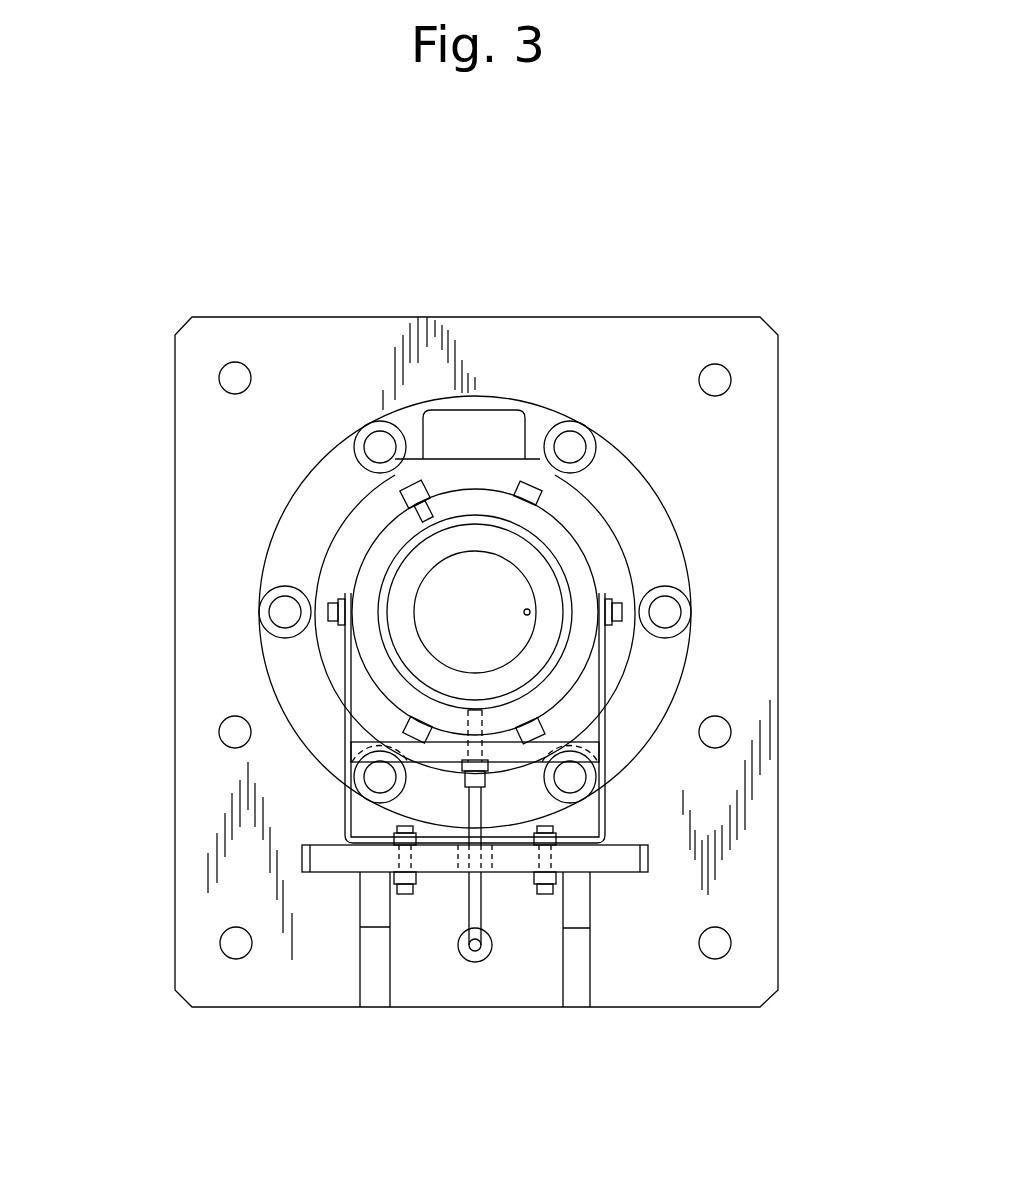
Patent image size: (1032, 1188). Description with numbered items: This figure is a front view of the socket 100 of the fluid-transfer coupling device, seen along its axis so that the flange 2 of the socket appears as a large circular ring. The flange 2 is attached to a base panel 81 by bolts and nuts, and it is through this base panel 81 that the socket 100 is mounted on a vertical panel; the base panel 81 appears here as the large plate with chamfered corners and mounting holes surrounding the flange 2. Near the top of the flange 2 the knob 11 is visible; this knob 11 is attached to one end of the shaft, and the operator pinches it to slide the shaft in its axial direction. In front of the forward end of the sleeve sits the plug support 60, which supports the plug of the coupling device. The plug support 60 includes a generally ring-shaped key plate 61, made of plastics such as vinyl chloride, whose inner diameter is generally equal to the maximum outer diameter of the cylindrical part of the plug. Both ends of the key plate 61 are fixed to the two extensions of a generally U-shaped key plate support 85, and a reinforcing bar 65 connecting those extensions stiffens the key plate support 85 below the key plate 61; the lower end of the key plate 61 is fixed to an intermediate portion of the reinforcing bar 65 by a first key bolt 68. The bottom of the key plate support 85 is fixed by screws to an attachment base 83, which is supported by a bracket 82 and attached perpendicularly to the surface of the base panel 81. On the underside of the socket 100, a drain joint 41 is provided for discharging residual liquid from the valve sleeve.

The socket 100 is at (255, 513).
The base panel 81 is at (363, 340).
The flange 2 is at (600, 482).
The knob 11 is at (493, 423).
The plug support 60 is at (593, 553).
The key plate 61 is at (575, 655).
The key plate support 85 is at (608, 818).
The drain joint 41 is at (511, 783).
The first key bolt 68 is at (460, 782).
The reinforcing bar 65 is at (483, 903).
The attachment base 83 is at (338, 862).
The bracket 82 is at (380, 985).